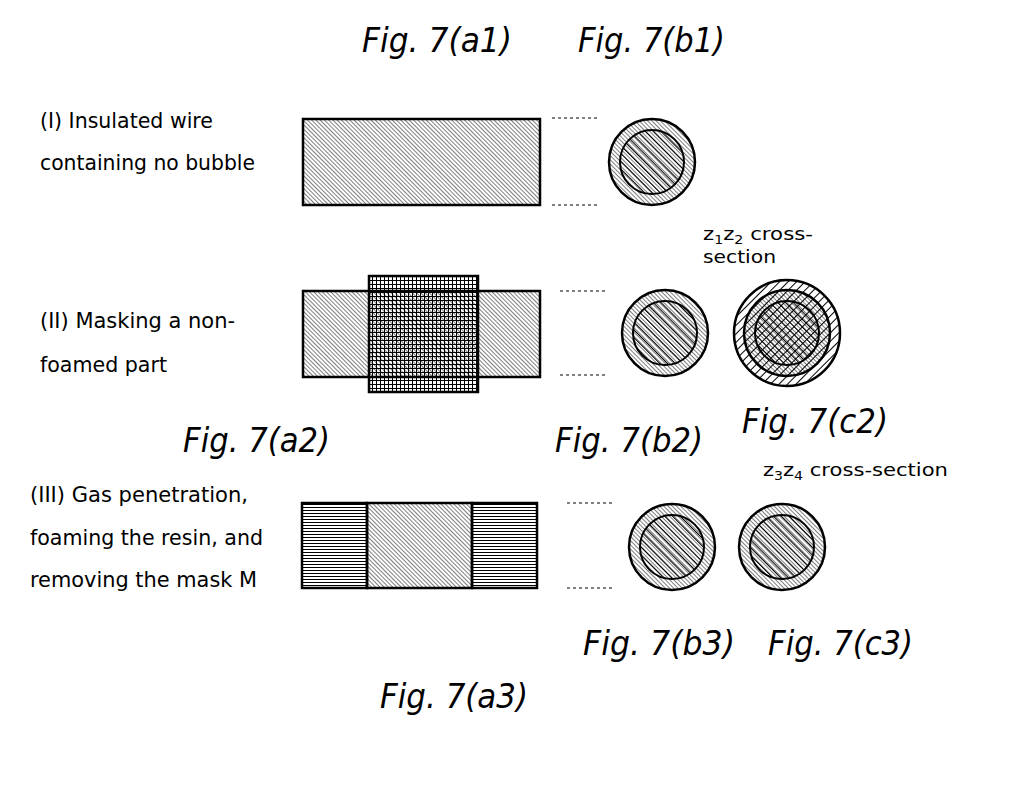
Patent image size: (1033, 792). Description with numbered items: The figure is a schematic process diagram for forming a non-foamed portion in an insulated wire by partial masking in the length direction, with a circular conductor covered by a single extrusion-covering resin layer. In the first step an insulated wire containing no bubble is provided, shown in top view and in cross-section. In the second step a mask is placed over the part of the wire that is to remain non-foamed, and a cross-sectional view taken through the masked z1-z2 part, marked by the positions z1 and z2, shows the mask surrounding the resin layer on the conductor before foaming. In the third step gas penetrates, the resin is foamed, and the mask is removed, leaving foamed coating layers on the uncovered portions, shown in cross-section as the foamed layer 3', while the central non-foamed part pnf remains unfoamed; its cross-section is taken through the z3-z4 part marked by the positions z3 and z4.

The foamed coating layer 3' is at (682, 534).
The non-foamed part pnf is at (398, 577).
The z1 section position z1 is at (422, 275).
The z2 section position z2 is at (422, 393).
The z3 section position z3 is at (418, 502).
The z4 section position z4 is at (418, 591).